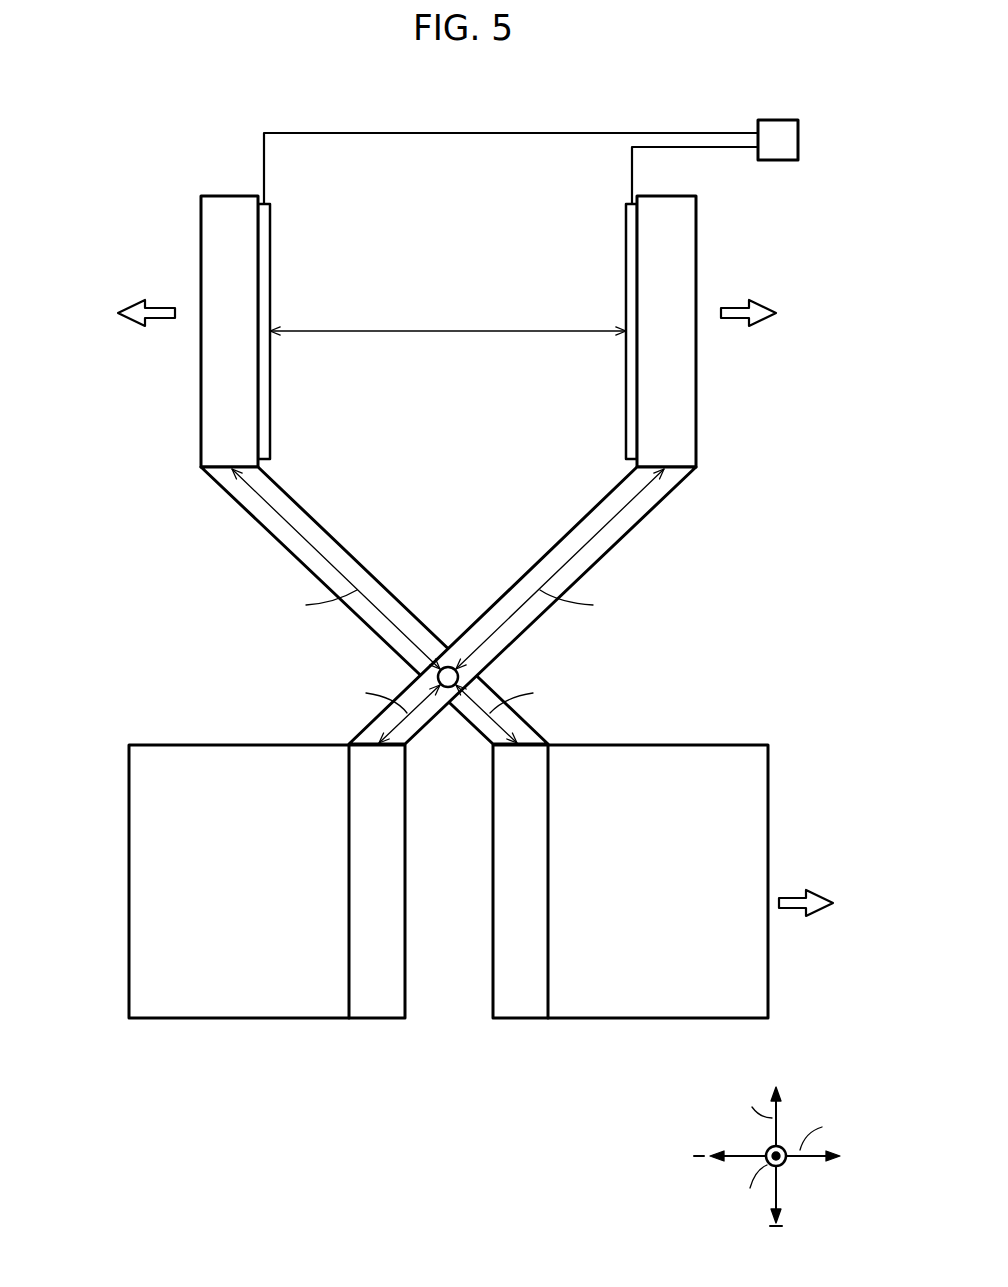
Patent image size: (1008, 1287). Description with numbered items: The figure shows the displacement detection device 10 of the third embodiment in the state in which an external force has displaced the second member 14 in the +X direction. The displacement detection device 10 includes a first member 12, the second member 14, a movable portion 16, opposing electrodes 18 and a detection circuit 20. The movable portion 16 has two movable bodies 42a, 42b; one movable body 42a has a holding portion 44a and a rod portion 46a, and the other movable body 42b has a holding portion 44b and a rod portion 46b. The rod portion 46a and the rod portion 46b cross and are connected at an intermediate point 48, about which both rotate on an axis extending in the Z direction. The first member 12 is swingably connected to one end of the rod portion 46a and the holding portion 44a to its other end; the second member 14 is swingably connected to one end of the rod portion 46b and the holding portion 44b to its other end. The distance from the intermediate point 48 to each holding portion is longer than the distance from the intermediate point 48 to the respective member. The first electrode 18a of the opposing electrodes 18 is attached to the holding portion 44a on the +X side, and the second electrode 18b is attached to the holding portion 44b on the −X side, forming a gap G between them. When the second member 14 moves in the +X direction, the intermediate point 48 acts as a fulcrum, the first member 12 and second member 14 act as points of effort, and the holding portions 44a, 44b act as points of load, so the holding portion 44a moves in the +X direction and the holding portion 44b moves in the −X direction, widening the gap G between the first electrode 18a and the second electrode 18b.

The displacement detection device 10 is at (276, 94).
The first member 12 is at (313, 1003).
The second member 14 is at (663, 1003).
The movable portion 16 is at (728, 620).
The opposing electrodes 18 is at (493, 230).
The first electrode 18a is at (632, 245).
The second electrode 18b is at (264, 244).
The detection circuit 20 is at (781, 161).
The movable body 42a is at (782, 443).
The movable body 42b is at (115, 440).
The holding portion 44a is at (677, 449).
The holding portion 44b is at (220, 448).
The rod portion 46a is at (665, 480).
The rod portion 46b is at (233, 481).
The intermediate point 48 is at (448, 666).